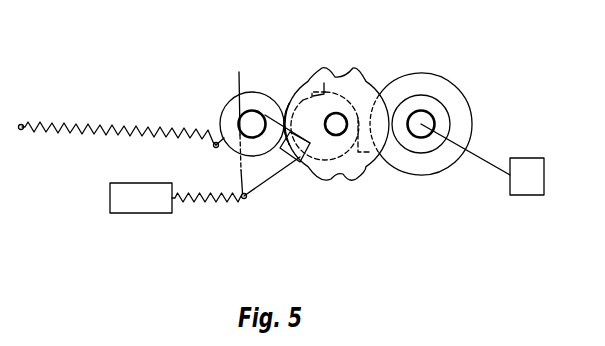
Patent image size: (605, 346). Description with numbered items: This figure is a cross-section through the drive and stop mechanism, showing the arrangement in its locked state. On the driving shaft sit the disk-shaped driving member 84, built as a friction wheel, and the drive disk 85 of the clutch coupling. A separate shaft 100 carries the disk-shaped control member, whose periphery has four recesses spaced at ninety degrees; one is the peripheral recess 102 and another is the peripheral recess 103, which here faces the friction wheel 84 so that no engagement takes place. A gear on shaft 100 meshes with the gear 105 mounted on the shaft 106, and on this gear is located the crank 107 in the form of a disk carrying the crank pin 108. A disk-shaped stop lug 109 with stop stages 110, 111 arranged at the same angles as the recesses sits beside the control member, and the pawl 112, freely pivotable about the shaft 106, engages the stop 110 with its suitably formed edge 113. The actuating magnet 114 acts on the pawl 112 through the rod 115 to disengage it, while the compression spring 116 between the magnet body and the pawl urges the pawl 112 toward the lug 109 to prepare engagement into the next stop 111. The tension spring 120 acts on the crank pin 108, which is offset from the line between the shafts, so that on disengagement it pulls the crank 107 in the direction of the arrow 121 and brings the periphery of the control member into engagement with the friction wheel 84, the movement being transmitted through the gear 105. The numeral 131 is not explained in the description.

The driving member 84 is at (440, 119).
The drive disk 85 is at (423, 80).
The shaft 100 is at (342, 128).
The peripheral recess 102 is at (335, 76).
The peripheral recess 103 is at (393, 135).
The gear 105 is at (222, 108).
The shaft 106 is at (243, 110).
The crank 107 is at (212, 140).
The crank pin 108 is at (212, 151).
The stop lug 109 is at (328, 176).
The stop stage 110 is at (315, 162).
The stop stage 111 is at (313, 95).
The pawl 112 is at (238, 176).
The edge 113 is at (297, 163).
The actuating magnet 114 is at (112, 200).
The rod 115 is at (189, 202).
The compression spring 116 is at (218, 200).
The tension spring 120 is at (78, 134).
The arrow 121 is at (188, 127).
The switch 131 is at (523, 196).